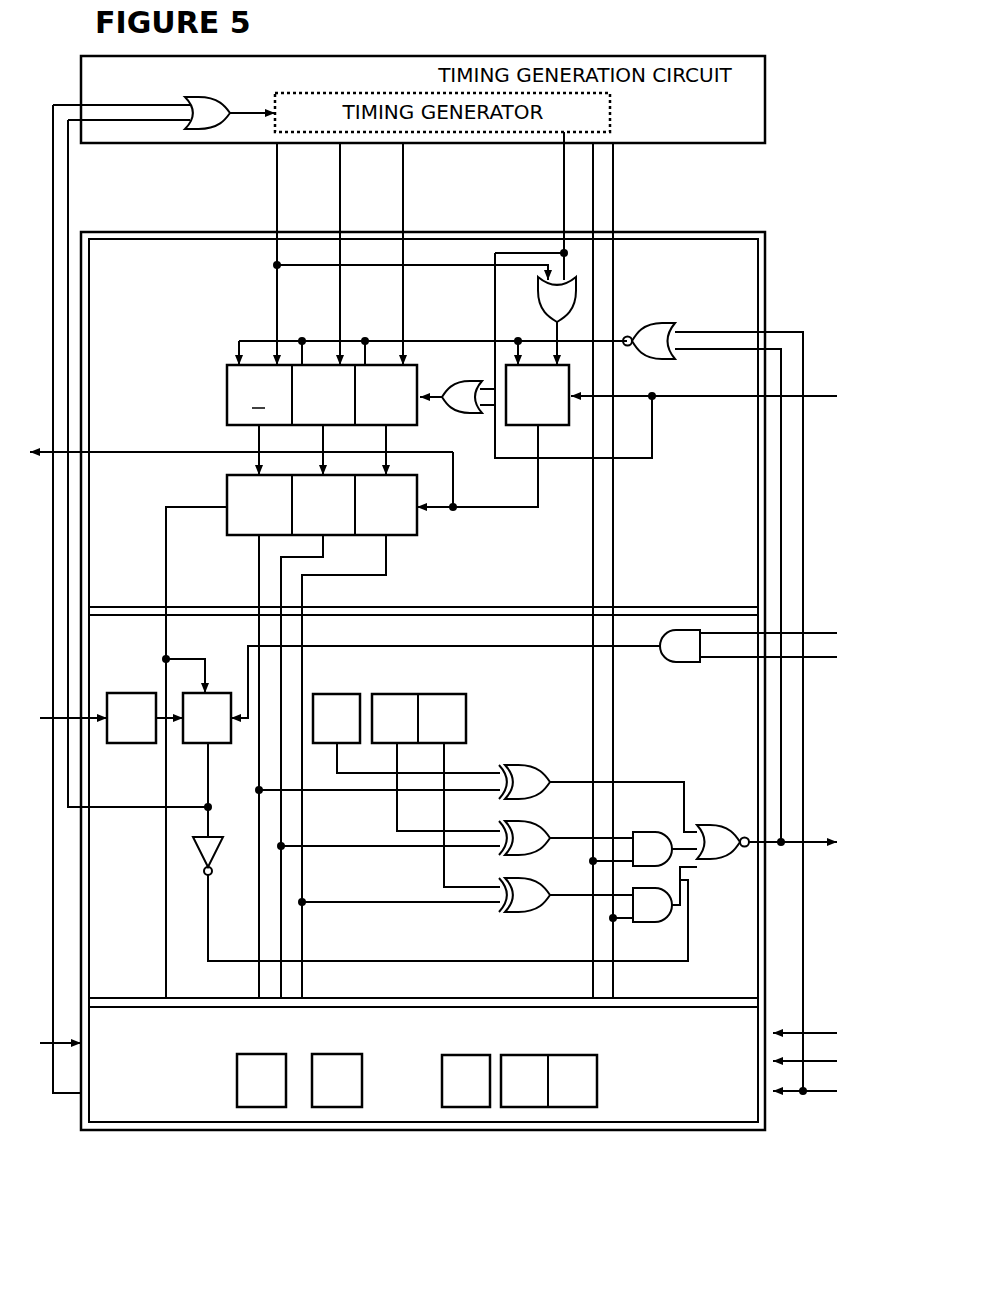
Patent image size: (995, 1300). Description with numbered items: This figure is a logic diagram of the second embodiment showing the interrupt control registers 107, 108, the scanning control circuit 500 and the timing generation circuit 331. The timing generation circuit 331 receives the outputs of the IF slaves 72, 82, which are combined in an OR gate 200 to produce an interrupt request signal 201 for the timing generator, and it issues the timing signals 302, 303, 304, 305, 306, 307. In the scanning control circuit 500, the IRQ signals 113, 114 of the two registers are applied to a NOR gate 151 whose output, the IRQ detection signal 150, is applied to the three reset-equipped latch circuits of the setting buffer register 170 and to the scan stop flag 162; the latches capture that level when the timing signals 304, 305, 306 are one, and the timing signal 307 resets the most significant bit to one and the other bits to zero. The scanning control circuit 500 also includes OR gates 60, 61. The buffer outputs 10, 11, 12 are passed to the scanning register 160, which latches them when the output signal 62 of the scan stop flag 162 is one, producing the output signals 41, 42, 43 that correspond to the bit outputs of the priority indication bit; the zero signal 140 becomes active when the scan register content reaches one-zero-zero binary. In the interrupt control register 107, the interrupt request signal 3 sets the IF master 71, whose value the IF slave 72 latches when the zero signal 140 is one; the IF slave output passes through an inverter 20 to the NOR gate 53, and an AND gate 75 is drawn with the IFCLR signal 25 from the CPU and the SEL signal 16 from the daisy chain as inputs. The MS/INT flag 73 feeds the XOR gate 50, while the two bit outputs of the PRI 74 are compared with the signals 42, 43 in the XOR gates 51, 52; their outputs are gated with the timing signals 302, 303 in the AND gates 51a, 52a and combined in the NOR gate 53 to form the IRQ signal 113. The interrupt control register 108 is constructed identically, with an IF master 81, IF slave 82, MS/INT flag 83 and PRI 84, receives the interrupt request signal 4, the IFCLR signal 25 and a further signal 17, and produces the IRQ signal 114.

The OR gate 200 is at (198, 97).
The interrupt request signal 201 is at (245, 112).
The timing generation circuit 331 is at (457, 144).
The timing signal 304 is at (277, 196).
The timing signal 305 is at (340, 196).
The timing signal 306 is at (403, 196).
The timing signal 307 is at (563, 204).
The timing signal 302 is at (593, 185).
The timing signal 303 is at (613, 208).
The scanning control circuit 500 is at (703, 232).
The IRQ detection signal 150 is at (428, 340).
The NOR gate 151 is at (652, 324).
The OR gate 60 is at (542, 300).
The OR gate 61 is at (468, 383).
The setting buffer register 170 is at (228, 365).
The scan stop flag 162 is at (572, 432).
The IFCLR signal 25 is at (806, 396).
The register output line 10 is at (258, 443).
The register output line 11 is at (322, 443).
The register output line 12 is at (384, 443).
The output signal of scan stop flag 62 is at (463, 504).
The scanning register 160 is at (420, 537).
The output signal of scanning register 41 is at (258, 558).
The output signal of scanning register 42 is at (326, 548).
The output signal of scanning register 43 is at (304, 577).
The zero signal 140 is at (166, 641).
The MS/INT flag 73 is at (334, 694).
The priority indication bit 74 is at (442, 694).
The AND gate 75 is at (683, 662).
The SEL signal 16 is at (806, 657).
The IF master 71 is at (135, 743).
The IF slave 72 is at (215, 743).
The interrupt request signal 3 is at (50, 722).
The XOR gate 50 is at (540, 768).
The XOR gate 51 is at (540, 824).
The XOR gate 52 is at (540, 881).
The AND gate 51a is at (660, 817).
The AND gate 52a is at (643, 922).
The NOR gate 53 is at (733, 825).
The inverter 20 is at (202, 855).
The IRQ signal 113 is at (806, 845).
The interrupt control register 107 is at (765, 960).
The interrupt request signal 4 is at (65, 1042).
The IF master 81 is at (260, 1054).
The IF slave 82 is at (335, 1054).
The MS/INT flag 83 is at (465, 1055).
The priority indication bit 84 is at (575, 1055).
The signal line 17 is at (808, 1061).
The interrupt control register 108 is at (81, 1102).
The IRQ signal 114 is at (806, 1093).